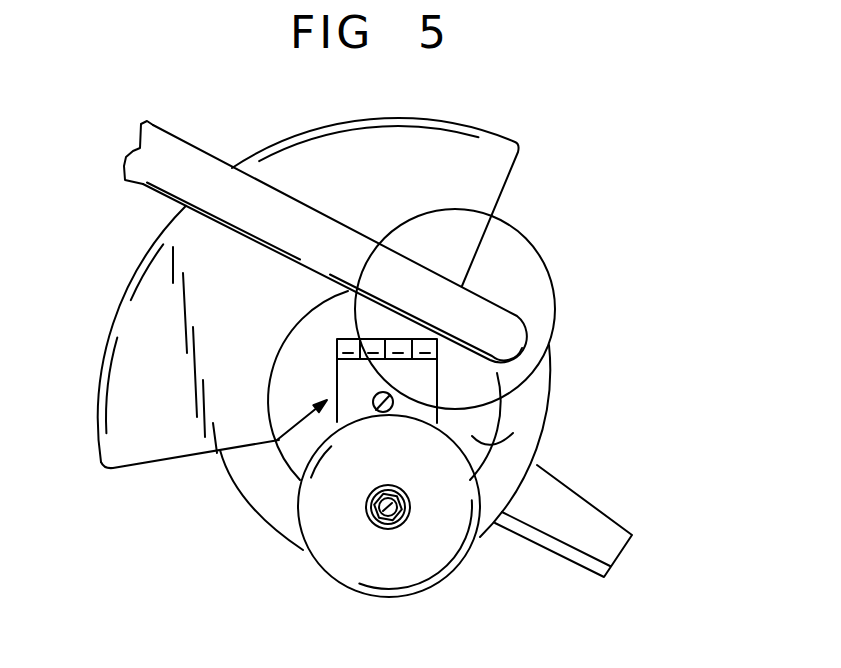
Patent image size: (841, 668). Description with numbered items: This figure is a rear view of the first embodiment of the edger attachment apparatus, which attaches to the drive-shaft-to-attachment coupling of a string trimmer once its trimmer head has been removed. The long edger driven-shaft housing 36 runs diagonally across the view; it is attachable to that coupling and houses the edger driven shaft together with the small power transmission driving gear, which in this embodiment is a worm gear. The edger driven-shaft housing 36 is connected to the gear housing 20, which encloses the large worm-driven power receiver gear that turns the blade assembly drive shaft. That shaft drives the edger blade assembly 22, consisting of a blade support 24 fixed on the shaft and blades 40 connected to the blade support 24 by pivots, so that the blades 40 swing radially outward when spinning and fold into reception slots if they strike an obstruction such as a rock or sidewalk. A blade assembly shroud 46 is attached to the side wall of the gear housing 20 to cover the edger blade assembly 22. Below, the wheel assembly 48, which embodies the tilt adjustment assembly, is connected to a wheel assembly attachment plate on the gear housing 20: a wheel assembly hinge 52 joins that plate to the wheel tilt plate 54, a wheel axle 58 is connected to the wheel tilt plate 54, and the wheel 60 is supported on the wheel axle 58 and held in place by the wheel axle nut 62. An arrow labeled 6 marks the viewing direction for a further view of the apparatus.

The section view direction arrow 6 is at (547, 263).
The gear housing 20 is at (545, 418).
The edger blade assembly 22 is at (546, 455).
The blade support 24 is at (545, 385).
The edger driven-shaft housing 36 is at (244, 200).
The blades 40 is at (615, 540).
The blade assembly shroud 46 is at (493, 150).
The wheel assembly 48 is at (277, 440).
The wheel assembly hinge 52 is at (337, 349).
The wheel tilt plate 54 is at (348, 375).
The wheel axle 58 is at (368, 503).
The wheel 60 is at (433, 560).
The wheel axle nut 62 is at (390, 522).